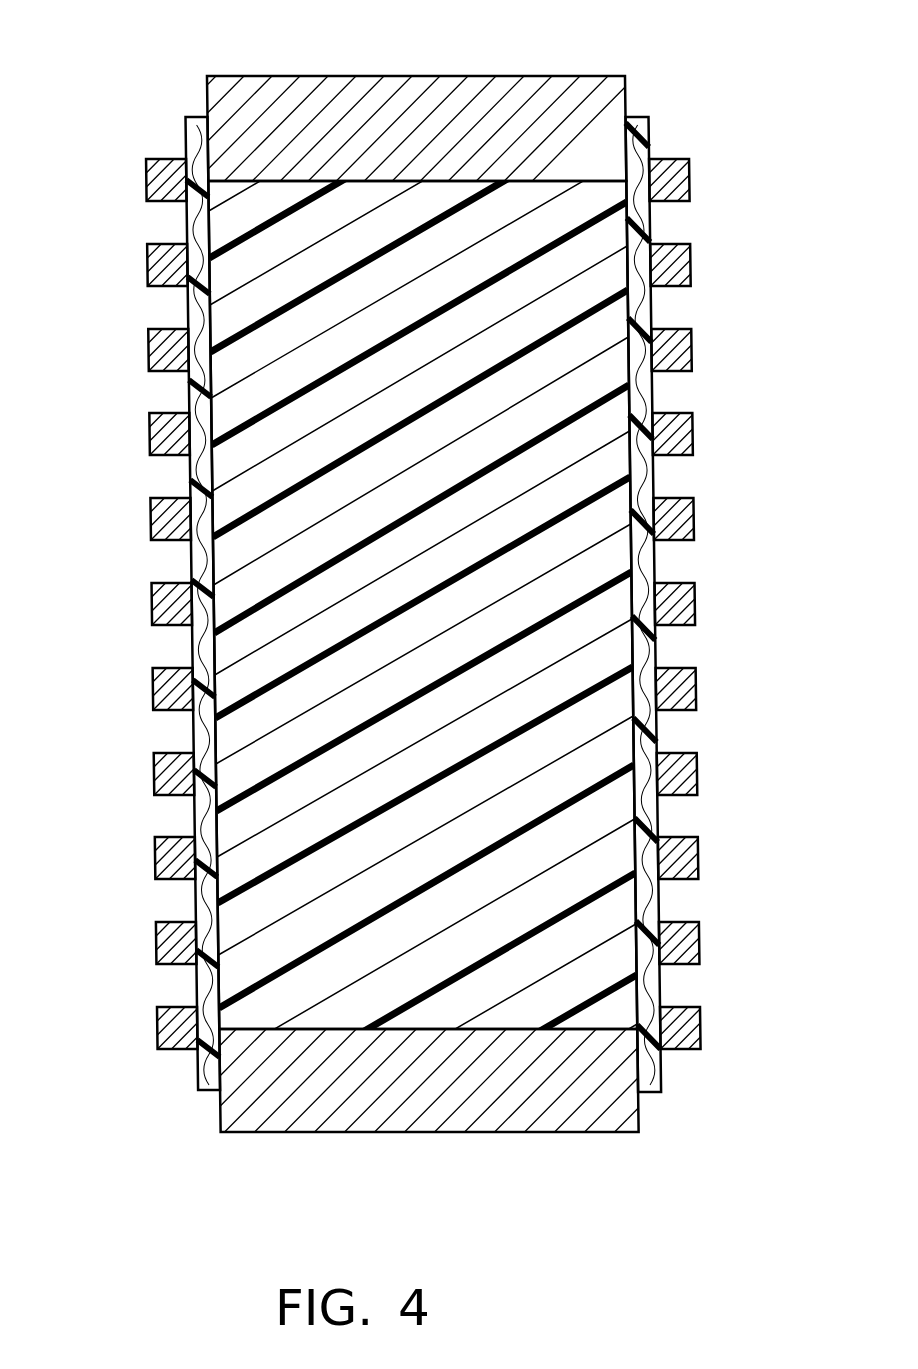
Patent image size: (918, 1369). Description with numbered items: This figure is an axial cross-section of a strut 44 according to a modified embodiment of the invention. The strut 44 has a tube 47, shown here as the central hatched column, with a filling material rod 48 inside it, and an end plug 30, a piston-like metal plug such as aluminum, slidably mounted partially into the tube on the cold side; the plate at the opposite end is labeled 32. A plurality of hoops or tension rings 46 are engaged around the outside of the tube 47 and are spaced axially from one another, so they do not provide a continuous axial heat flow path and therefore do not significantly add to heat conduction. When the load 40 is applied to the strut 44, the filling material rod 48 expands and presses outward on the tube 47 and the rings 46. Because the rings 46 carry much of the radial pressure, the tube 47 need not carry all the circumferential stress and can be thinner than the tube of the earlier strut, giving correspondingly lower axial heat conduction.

The end plug 30 is at (607, 1115).
The upper plate 32 is at (505, 76).
The load 40 is at (453, 1150).
The strut 44 is at (679, 735).
The tension rings 46 is at (693, 347).
The tube 47 is at (653, 147).
The filling material rod 48 is at (613, 559).